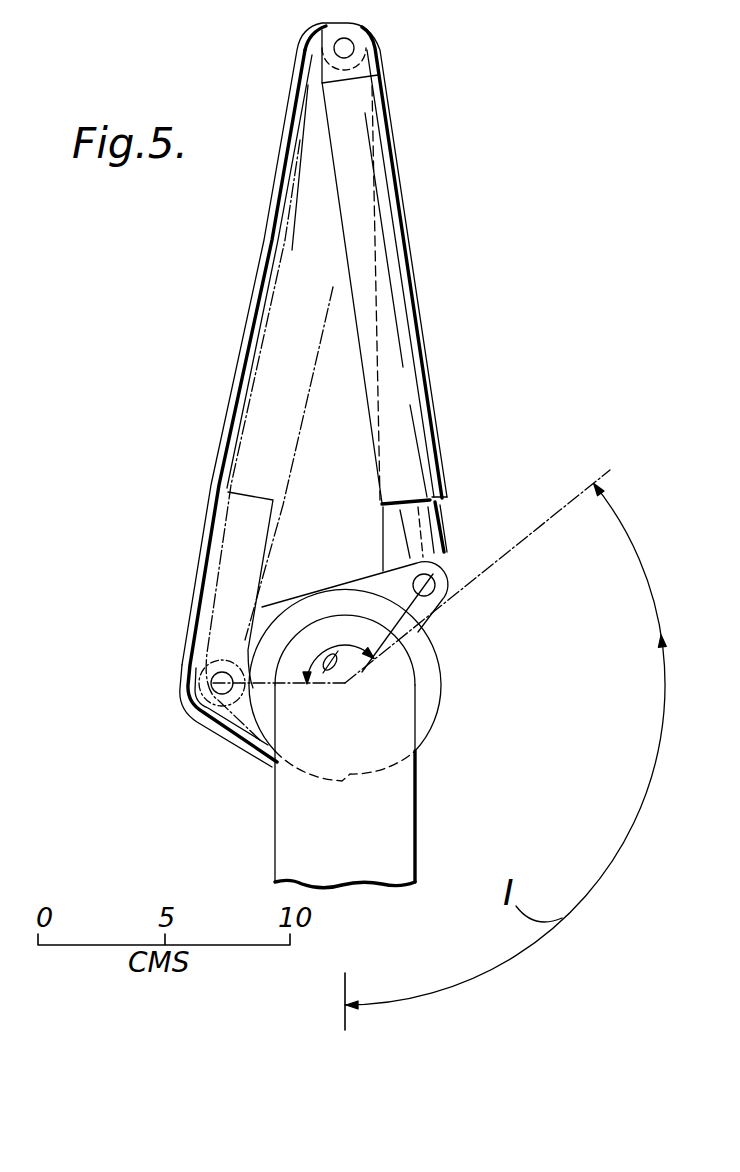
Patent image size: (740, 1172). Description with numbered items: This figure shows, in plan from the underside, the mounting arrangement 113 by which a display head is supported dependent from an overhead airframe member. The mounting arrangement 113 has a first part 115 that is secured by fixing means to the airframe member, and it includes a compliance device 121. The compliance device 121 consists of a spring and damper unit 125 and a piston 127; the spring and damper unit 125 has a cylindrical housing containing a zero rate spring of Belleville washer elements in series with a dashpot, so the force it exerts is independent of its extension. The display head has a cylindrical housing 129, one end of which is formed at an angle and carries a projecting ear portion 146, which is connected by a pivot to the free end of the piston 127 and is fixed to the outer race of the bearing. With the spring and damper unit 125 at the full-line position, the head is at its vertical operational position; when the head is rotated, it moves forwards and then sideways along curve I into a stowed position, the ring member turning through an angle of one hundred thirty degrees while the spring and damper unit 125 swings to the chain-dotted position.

The mounting arrangement 113 is at (449, 444).
The first part 115 is at (205, 531).
The compliance device 121 is at (430, 352).
The spring and damper unit 125 is at (447, 478).
The piston 127 is at (436, 537).
The cylindrical housing 129 is at (288, 840).
The projecting ear portion 146 is at (452, 587).